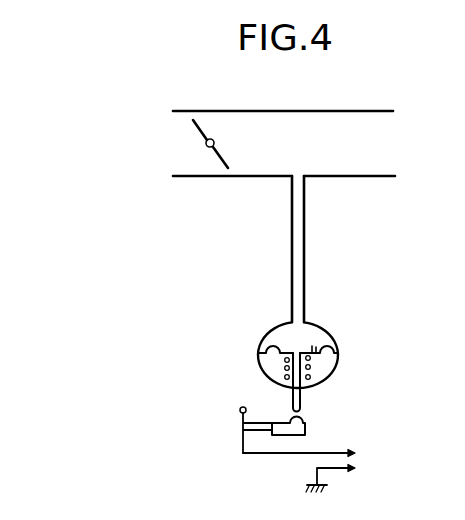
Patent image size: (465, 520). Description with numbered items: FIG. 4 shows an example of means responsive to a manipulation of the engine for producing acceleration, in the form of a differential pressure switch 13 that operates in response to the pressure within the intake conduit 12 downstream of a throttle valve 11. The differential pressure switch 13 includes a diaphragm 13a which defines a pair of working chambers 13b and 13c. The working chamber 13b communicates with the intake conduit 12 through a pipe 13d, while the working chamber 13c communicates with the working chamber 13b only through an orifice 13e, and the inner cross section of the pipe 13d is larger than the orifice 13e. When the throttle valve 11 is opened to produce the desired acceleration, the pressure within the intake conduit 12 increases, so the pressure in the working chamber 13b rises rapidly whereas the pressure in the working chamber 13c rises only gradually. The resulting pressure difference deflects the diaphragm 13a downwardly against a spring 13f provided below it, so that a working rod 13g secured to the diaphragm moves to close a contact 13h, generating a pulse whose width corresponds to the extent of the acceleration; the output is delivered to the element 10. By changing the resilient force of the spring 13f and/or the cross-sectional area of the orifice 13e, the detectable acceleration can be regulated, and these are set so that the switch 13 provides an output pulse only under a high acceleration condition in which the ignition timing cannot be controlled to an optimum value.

The control circuit (destination of output signals) 10 is at (330, 470).
The throttle valve 11 is at (225, 167).
The intake conduit 12 is at (370, 109).
The differential pressure switch 13 is at (291, 295).
The diaphragm 13a is at (283, 346).
The working chamber 13b is at (312, 324).
The working chamber 13c is at (323, 365).
The pipe 13d is at (306, 228).
The orifice 13e is at (313, 351).
The spring 13f is at (278, 362).
The working rod 13g is at (303, 400).
The contact 13h is at (307, 430).